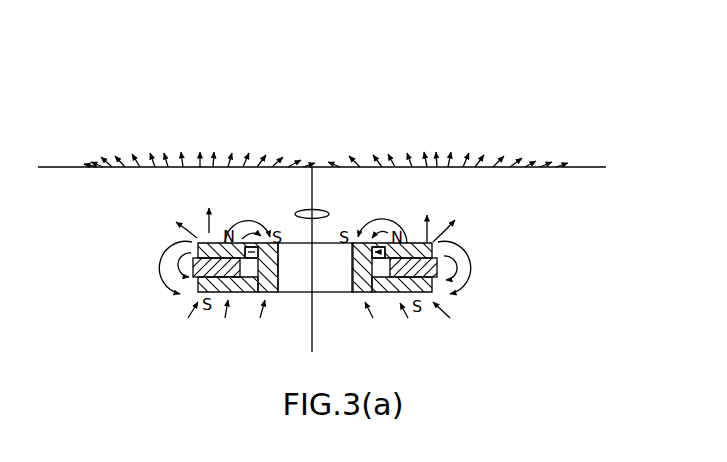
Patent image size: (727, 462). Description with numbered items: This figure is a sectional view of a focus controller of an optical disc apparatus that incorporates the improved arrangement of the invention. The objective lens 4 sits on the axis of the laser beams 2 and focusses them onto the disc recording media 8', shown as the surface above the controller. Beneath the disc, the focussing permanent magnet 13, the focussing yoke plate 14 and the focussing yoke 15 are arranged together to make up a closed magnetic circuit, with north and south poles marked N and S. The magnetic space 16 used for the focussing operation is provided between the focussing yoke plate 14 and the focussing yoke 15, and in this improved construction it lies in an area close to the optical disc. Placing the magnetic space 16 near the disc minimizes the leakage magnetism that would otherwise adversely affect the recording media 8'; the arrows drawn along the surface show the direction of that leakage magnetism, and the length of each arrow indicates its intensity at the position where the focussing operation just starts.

The disc recording media 8' is at (329, 126).
The laser beams 2 is at (312, 323).
The objective lens 4 is at (329, 213).
The focussing yoke plate 14 is at (197, 243).
The focussing yoke 15 is at (252, 284).
The focussing permanent magnet 13 is at (188, 275).
The magnetic space 16 is at (383, 256).